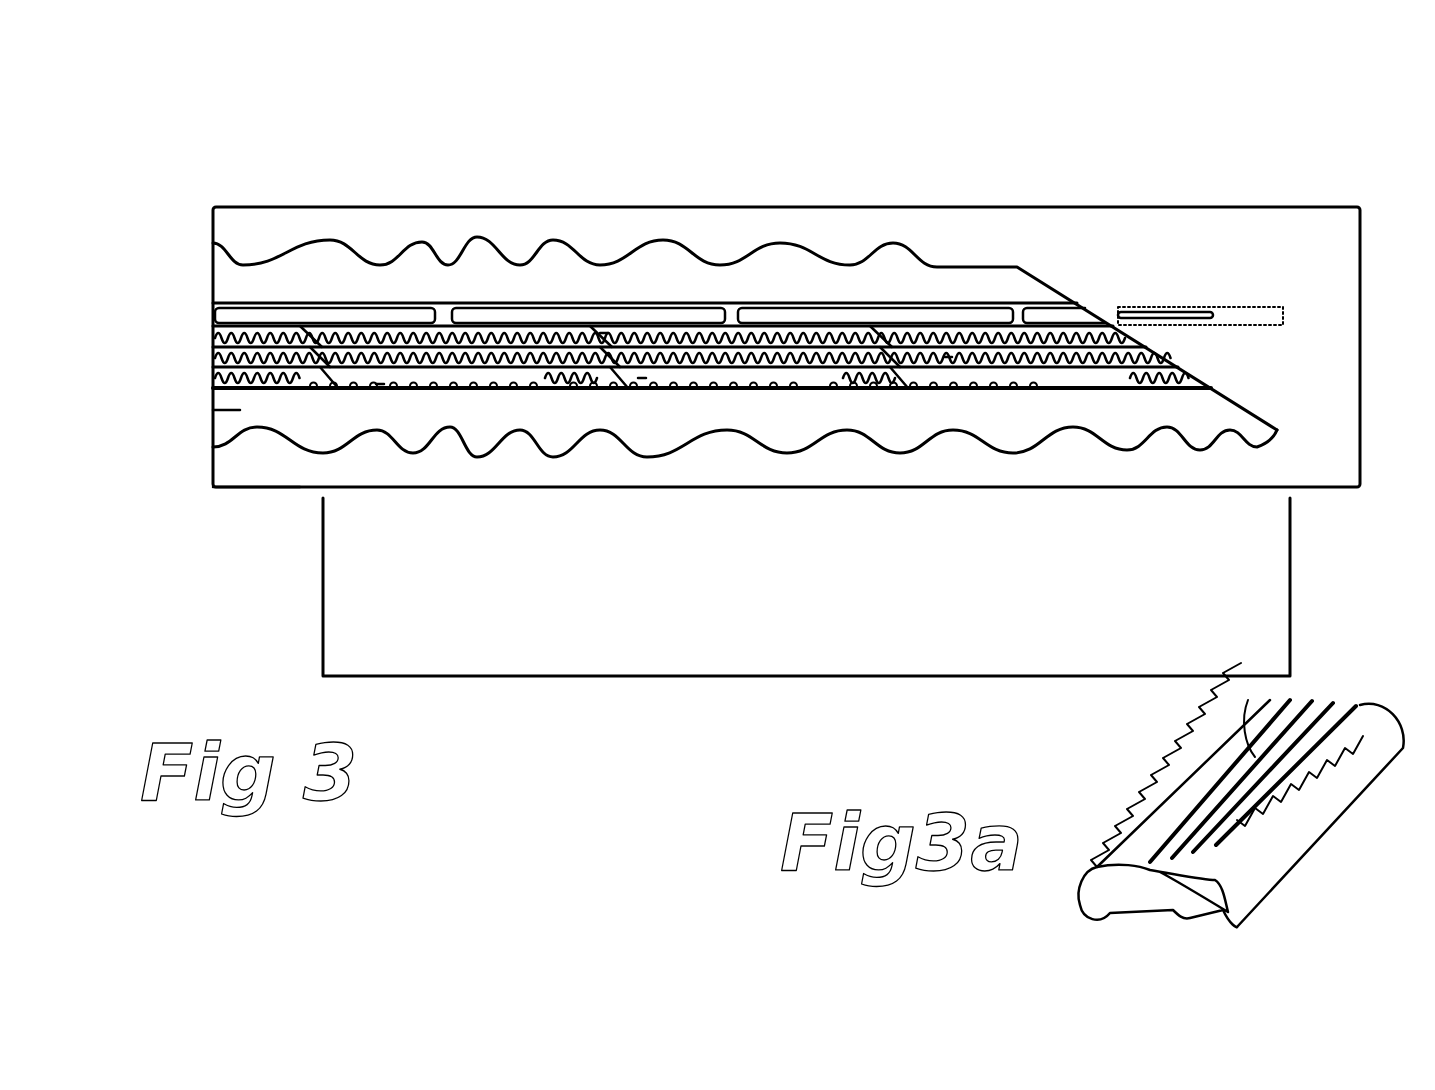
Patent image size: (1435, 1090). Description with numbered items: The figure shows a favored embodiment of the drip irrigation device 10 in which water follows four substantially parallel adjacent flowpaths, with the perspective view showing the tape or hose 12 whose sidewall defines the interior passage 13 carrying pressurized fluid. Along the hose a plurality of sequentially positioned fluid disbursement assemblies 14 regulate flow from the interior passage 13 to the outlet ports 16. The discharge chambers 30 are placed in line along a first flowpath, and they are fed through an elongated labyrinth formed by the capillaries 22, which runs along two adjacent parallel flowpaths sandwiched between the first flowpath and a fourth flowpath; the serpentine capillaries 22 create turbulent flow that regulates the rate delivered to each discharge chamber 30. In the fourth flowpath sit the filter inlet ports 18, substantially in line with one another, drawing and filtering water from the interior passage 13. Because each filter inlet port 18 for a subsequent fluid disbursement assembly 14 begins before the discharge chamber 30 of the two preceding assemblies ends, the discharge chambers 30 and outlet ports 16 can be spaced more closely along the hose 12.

In FIG. 3, the drip irrigation device 10 is at (738, 208).
In FIG. 3, the tape or hose 12 is at (288, 488).
In FIG. 3A, the tape or hose 12 is at (1227, 892).
In FIG. 3, the interior passage 13 is at (232, 413).
In FIG. 3A, the interior passage 13 is at (1138, 892).
In FIG. 3, the fluid disbursement assembly 14 is at (810, 676).
In FIG. 3, the outlet port 16 is at (1155, 312).
In FIG. 3, the filter inlet port 18 is at (688, 540).
In FIG. 3, the capillaries 22 is at (1011, 540).
In FIG. 3, the discharge chamber 30 is at (1062, 317).